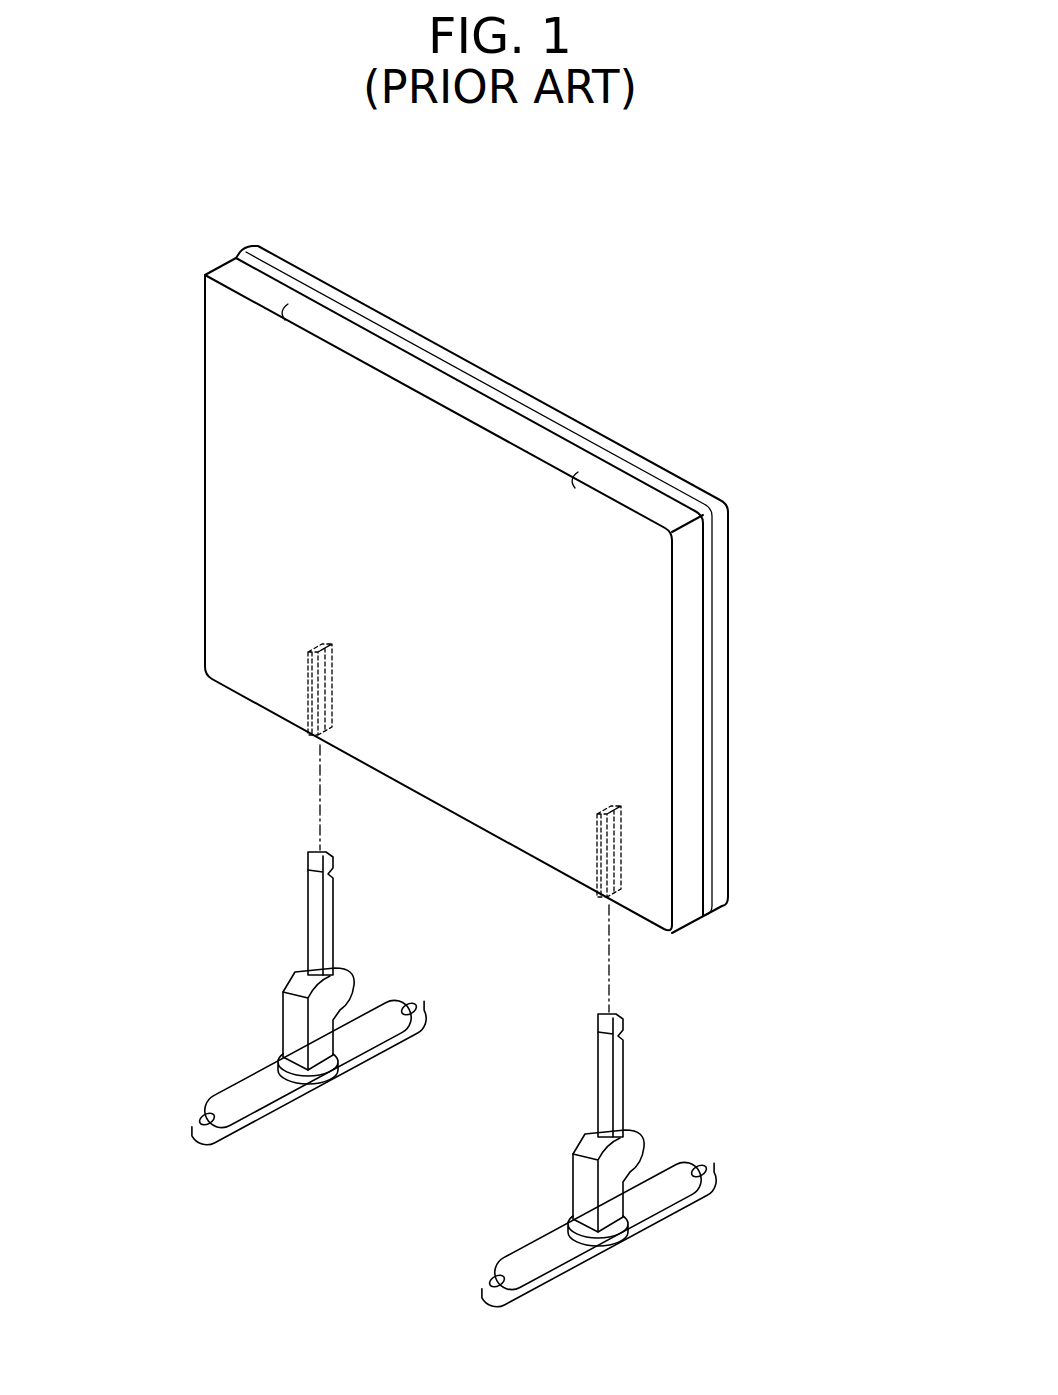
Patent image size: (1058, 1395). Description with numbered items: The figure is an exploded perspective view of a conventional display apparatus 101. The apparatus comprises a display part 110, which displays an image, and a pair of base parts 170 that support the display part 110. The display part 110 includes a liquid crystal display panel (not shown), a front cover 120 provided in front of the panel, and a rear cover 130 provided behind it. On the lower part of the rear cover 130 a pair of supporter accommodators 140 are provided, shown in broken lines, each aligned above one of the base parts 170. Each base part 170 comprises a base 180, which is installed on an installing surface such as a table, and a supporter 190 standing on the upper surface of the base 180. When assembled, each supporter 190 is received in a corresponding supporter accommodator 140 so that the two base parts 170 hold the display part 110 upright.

The conventional display apparatus 101 is at (673, 385).
The display part 110 is at (820, 575).
The front cover 120 is at (723, 572).
The rear cover 130 is at (697, 647).
The supporter accommodators 140 is at (307, 690).
The base part 170 is at (120, 943).
The base 180 is at (202, 1103).
The supporter 190 is at (308, 937).